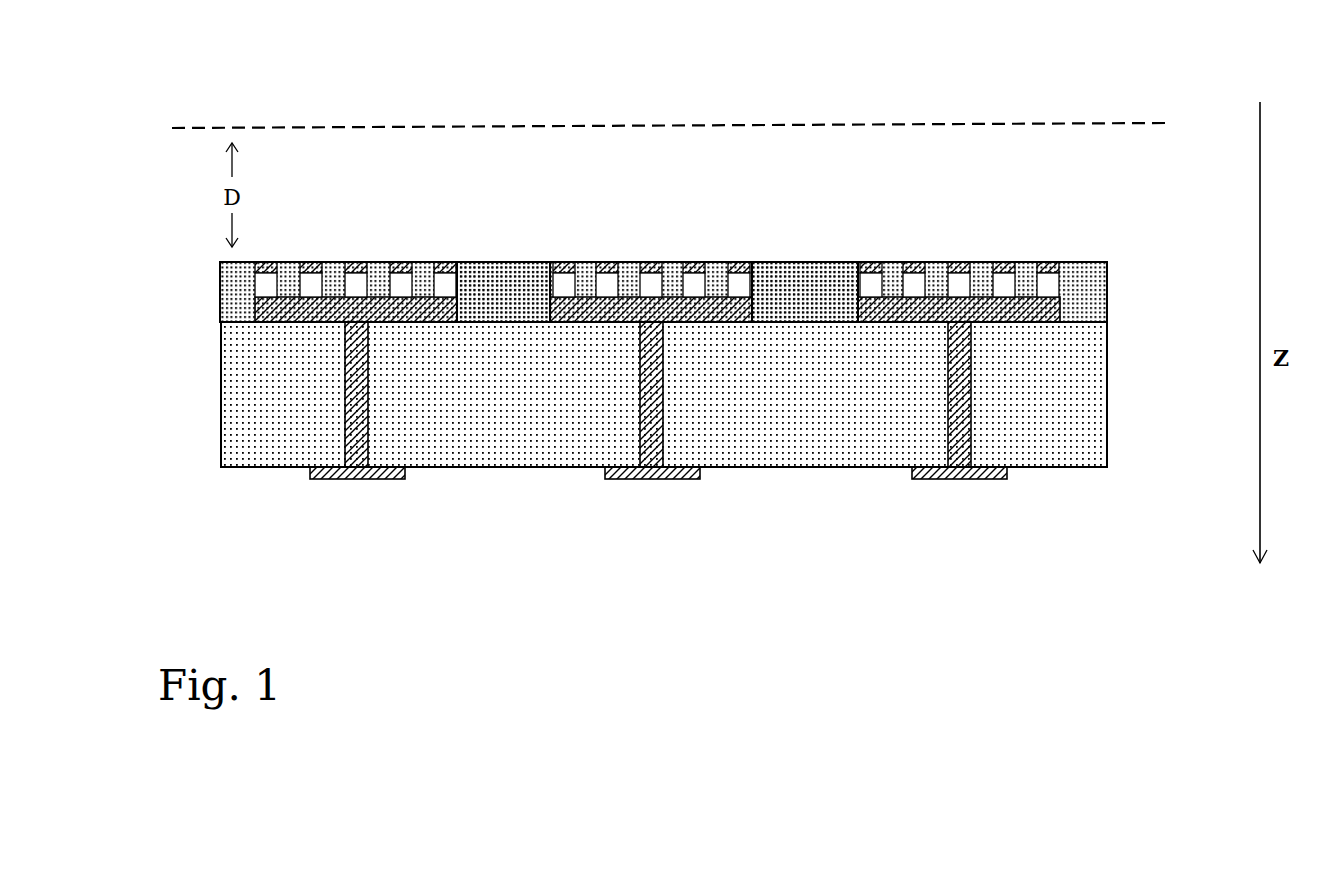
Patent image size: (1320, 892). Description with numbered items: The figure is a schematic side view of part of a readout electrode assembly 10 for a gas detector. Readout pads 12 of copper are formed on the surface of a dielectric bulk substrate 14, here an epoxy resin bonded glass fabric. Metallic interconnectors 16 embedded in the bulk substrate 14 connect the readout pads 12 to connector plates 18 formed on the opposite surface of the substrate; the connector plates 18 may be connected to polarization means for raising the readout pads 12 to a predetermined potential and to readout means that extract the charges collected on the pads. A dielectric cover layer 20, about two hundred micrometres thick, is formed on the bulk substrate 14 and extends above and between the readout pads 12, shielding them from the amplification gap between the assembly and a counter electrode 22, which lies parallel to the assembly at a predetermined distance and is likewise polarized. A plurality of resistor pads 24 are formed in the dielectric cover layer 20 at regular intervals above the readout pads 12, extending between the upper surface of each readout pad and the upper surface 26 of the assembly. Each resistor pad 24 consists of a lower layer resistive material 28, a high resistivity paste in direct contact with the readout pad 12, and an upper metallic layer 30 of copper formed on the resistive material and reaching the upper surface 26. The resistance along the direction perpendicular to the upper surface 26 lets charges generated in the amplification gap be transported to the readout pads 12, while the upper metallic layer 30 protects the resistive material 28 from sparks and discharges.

The readout electrode assembly 10 is at (660, 378).
The readout pads 12 is at (270, 316).
The dielectric bulk substrate 14 is at (1070, 380).
The metallic interconnectors 16 is at (345, 413).
The connector plates 18 is at (343, 477).
The dielectric cover layer 20 is at (812, 270).
The counter electrode 22 is at (727, 125).
The resistor pads 24 is at (577, 278).
The upper surface 26 is at (772, 257).
The lower layer resistive material 28 is at (547, 270).
The upper metallic layer 30 is at (563, 270).